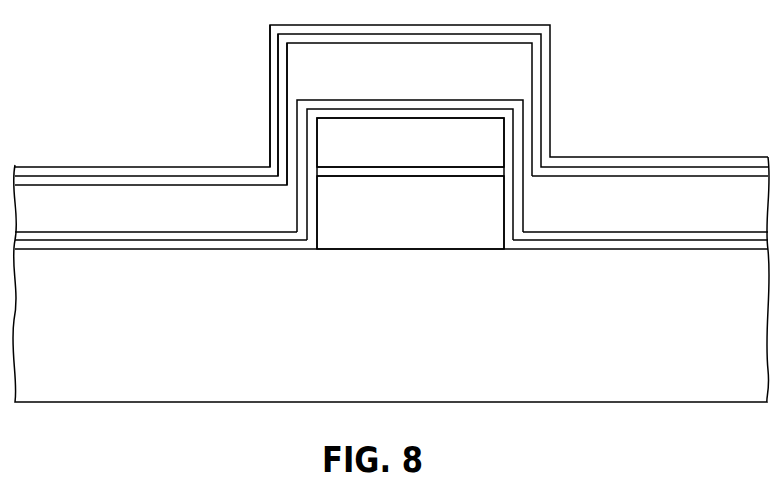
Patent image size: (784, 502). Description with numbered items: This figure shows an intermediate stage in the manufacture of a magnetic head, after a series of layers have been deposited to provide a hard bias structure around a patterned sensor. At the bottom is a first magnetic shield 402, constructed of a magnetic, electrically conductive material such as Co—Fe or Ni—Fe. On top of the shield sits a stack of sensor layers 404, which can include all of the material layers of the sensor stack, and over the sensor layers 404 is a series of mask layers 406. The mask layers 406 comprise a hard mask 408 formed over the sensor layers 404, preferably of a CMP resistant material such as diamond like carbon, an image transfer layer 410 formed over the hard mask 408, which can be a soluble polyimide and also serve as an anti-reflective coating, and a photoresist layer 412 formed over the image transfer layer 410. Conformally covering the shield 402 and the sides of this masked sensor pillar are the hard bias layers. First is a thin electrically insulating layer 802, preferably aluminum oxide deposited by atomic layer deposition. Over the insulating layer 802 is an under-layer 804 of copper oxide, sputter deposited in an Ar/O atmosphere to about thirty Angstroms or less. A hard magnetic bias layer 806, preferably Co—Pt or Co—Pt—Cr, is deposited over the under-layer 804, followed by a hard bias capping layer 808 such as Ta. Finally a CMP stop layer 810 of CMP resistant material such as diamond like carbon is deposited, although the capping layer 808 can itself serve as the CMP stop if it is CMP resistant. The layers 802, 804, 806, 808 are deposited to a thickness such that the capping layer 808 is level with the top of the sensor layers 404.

The first magnetic shield 402 is at (413, 327).
The sensor layers 404 is at (410, 213).
The mask layers 406 is at (258, 177).
The hard mask 408 is at (498, 170).
The image transfer layer 410 is at (410, 138).
The photoresist layer 412 is at (397, 93).
The electrically insulating layer 802 is at (672, 247).
The under-layer 804 is at (663, 237).
The hard magnetic bias layer 806 is at (675, 206).
The hard bias capping layer 808 is at (675, 172).
The CMP stop layer 810 is at (735, 162).